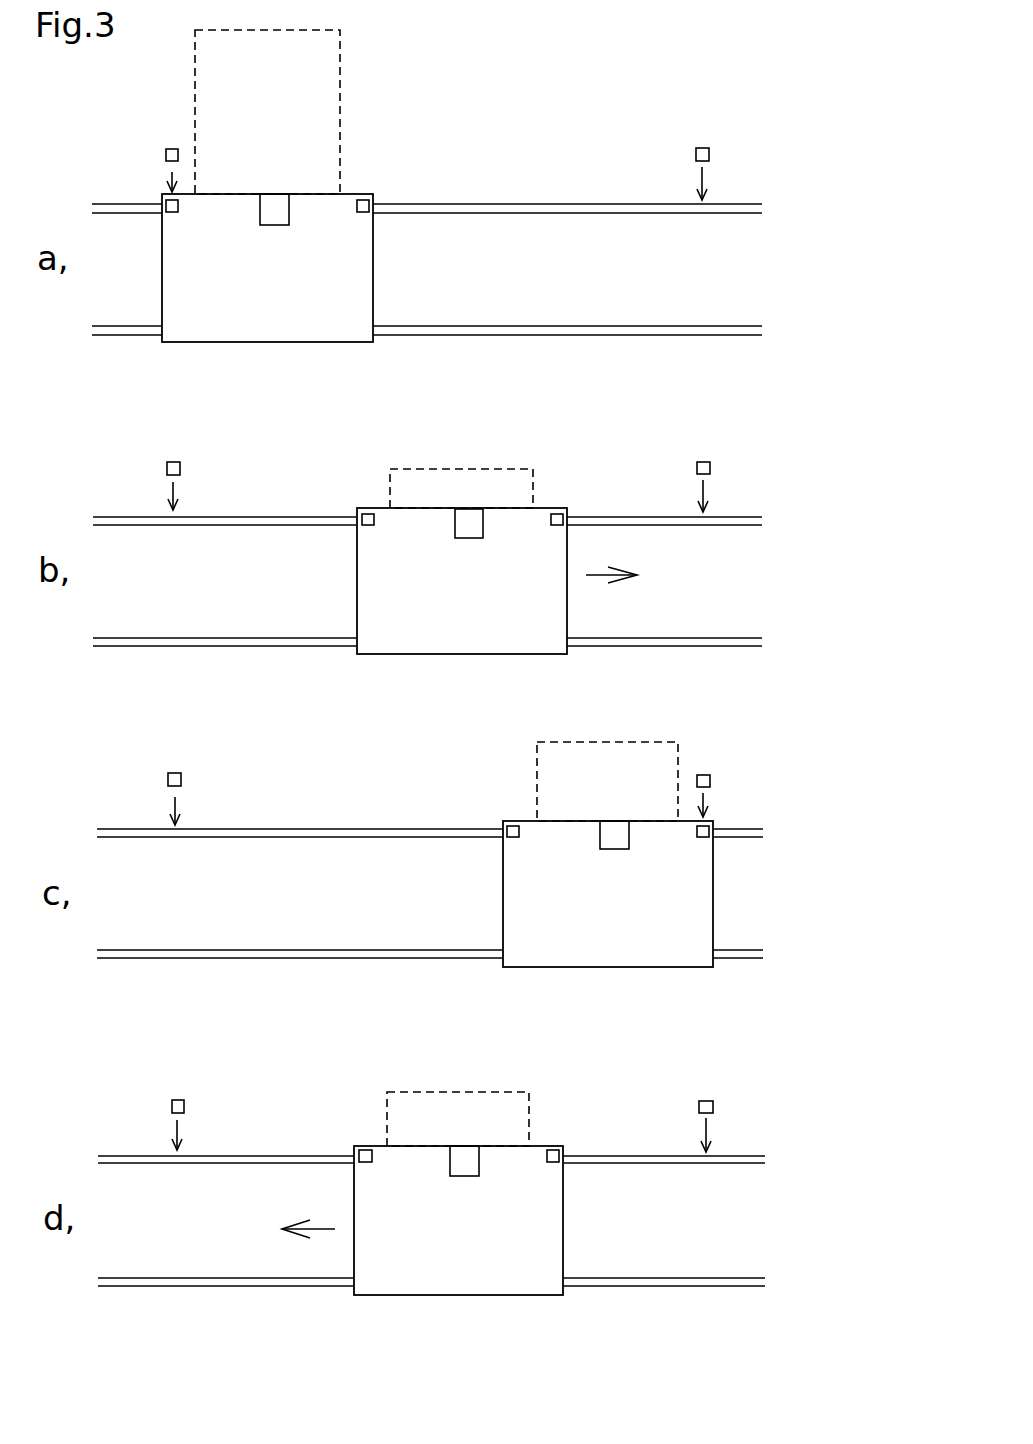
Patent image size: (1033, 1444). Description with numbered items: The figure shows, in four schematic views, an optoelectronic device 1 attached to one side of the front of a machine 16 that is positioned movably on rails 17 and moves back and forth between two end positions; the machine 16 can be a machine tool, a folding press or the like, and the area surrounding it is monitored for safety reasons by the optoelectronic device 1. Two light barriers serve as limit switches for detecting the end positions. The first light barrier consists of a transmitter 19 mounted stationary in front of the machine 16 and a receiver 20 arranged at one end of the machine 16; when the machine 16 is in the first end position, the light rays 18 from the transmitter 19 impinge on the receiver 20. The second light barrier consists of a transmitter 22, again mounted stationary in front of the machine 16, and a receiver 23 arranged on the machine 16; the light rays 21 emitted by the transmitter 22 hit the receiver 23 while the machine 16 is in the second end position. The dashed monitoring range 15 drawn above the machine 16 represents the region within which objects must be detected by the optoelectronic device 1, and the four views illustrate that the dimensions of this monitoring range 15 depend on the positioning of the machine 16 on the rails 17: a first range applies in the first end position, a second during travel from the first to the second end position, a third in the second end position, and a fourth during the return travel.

In FIG. 3a, the optoelectronic device 1 is at (272, 205).
In FIG. 3b, the optoelectronic device 1 is at (466, 518).
In FIG. 3c, the optoelectronic device 1 is at (613, 827).
In FIG. 3d, the optoelectronic device 1 is at (463, 1153).
In FIG. 3a, the monitoring range 15 is at (340, 60).
In FIG. 3b, the monitoring range 15 is at (536, 485).
In FIG. 3c, the monitoring range 15 is at (668, 737).
In FIG. 3d, the monitoring range 15 is at (448, 1092).
In FIG. 3a, the machine 16 is at (288, 311).
In FIG. 3b, the machine 16 is at (482, 624).
In FIG. 3c, the machine 16 is at (628, 936).
In FIG. 3d, the machine 16 is at (480, 1262).
In FIG. 3a, the rails 17 is at (558, 212).
In FIG. 3b, the rails 17 is at (649, 524).
In FIG. 3c, the rails 17 is at (223, 836).
In FIG. 3d, the rails 17 is at (183, 1165).
In FIG. 3a, the light rays 18 is at (172, 174).
In FIG. 3b, the light rays 18 is at (173, 485).
In FIG. 3c, the light rays 18 is at (175, 799).
In FIG. 3d, the light rays 18 is at (177, 1122).
In FIG. 3a, the transmitter 19 is at (170, 149).
In FIG. 3b, the transmitter 19 is at (170, 462).
In FIG. 3c, the transmitter 19 is at (172, 773).
In FIG. 3d, the transmitter 19 is at (173, 1100).
In FIG. 3a, the receiver 20 is at (172, 213).
In FIG. 3b, the receiver 20 is at (368, 525).
In FIG. 3c, the receiver 20 is at (514, 836).
In FIG. 3d, the receiver 20 is at (367, 1163).
In FIG. 3a, the light rays 21 is at (702, 178).
In FIG. 3b, the light rays 21 is at (703, 490).
In FIG. 3c, the light rays 21 is at (707, 803).
In FIG. 3d, the light rays 21 is at (708, 1130).
In FIG. 3a, the transmitter 22 is at (696, 152).
In FIG. 3b, the transmitter 22 is at (697, 465).
In FIG. 3c, the transmitter 22 is at (711, 779).
In FIG. 3d, the transmitter 22 is at (713, 1107).
In FIG. 3a, the receiver 23 is at (362, 213).
In FIG. 3b, the receiver 23 is at (557, 525).
In FIG. 3c, the receiver 23 is at (703, 838).
In FIG. 3d, the receiver 23 is at (553, 1165).